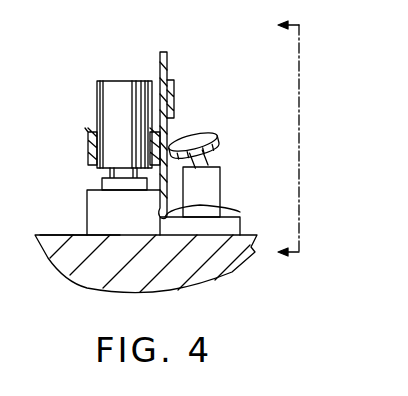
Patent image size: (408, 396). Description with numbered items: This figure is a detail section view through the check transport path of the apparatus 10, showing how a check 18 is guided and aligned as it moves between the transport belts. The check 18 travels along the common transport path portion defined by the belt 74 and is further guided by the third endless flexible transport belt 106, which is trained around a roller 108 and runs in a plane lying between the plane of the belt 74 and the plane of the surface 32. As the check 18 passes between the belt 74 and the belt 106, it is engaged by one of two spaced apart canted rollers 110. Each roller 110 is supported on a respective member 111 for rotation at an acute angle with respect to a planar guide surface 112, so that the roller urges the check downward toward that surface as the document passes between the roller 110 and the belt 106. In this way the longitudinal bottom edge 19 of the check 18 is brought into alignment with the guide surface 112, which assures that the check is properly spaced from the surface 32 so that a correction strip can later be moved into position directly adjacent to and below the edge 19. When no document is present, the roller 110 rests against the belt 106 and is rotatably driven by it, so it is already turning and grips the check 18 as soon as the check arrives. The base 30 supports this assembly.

The section line 10 is at (276, 140).
The check 18 is at (168, 62).
The longitudinal bottom edge 19 is at (158, 220).
The base 30 is at (60, 262).
The surface 32 is at (57, 233).
The belt 74 is at (175, 100).
The third endless flexible transport belt 106 is at (88, 150).
The roller 108 is at (120, 88).
The canted rollers 110 is at (218, 140).
The members 111 is at (212, 187).
The planar guide surface 112 is at (238, 211).